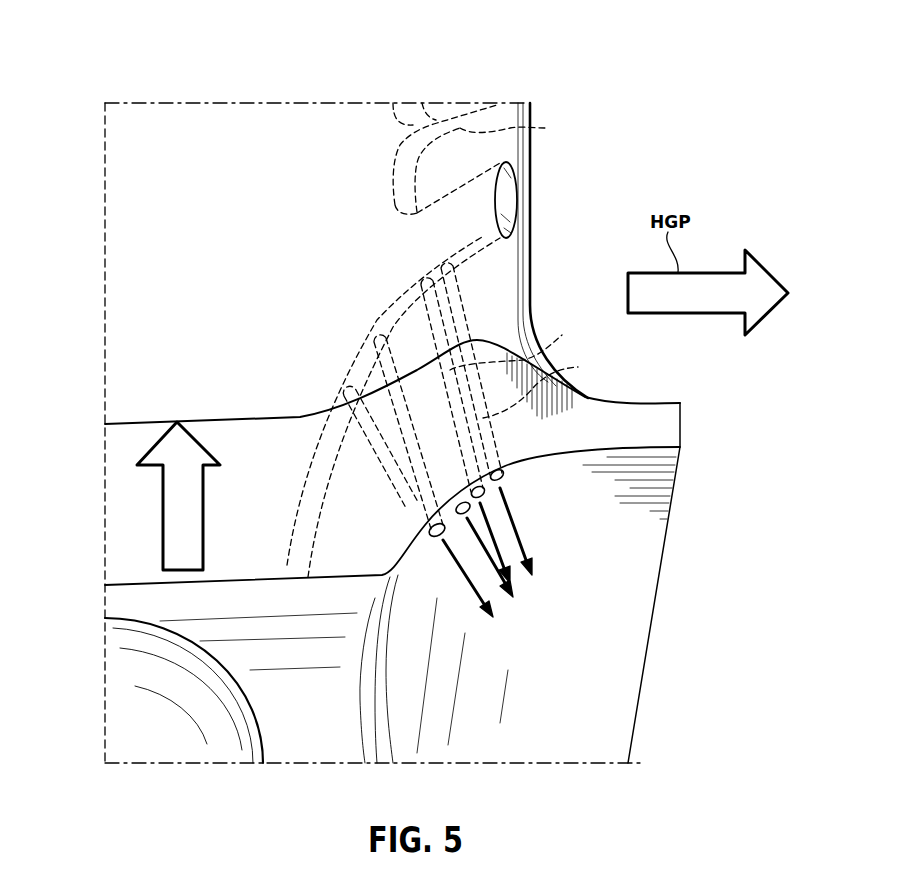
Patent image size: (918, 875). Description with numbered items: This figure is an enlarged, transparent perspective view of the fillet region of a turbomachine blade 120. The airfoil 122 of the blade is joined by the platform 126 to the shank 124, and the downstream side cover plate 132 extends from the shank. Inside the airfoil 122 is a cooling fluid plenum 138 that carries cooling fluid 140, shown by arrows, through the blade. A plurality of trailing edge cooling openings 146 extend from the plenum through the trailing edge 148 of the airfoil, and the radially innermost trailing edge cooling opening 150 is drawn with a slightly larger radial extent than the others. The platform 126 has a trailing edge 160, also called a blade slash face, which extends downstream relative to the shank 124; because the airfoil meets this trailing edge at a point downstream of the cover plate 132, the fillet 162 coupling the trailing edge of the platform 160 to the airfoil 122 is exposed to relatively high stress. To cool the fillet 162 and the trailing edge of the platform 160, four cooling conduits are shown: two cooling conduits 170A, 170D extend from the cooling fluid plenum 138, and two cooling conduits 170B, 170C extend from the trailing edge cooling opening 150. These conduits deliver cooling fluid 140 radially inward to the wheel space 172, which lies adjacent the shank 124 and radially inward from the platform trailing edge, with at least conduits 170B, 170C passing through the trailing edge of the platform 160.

The turbomachine blade 120 is at (109, 194).
The airfoil 122 is at (360, 123).
The shank 124 is at (179, 686).
The platform 126 is at (392, 558).
The cover plate 132 is at (350, 738).
The cooling fluid plenum 138 is at (120, 307).
The cooling fluid 140 is at (162, 564).
The trailing edge cooling openings 146 is at (522, 130).
The trailing edge 148 is at (519, 112).
The radially innermost trailing edge cooling opening 150 is at (518, 200).
The trailing edge of the platform 160 is at (660, 423).
The fillet 162 is at (482, 350).
The cooling conduit 170A is at (375, 367).
The cooling conduit 170B is at (508, 385).
The cooling conduit 170C is at (534, 369).
The cooling conduit 170D is at (400, 475).
The wheel space 172 is at (516, 675).